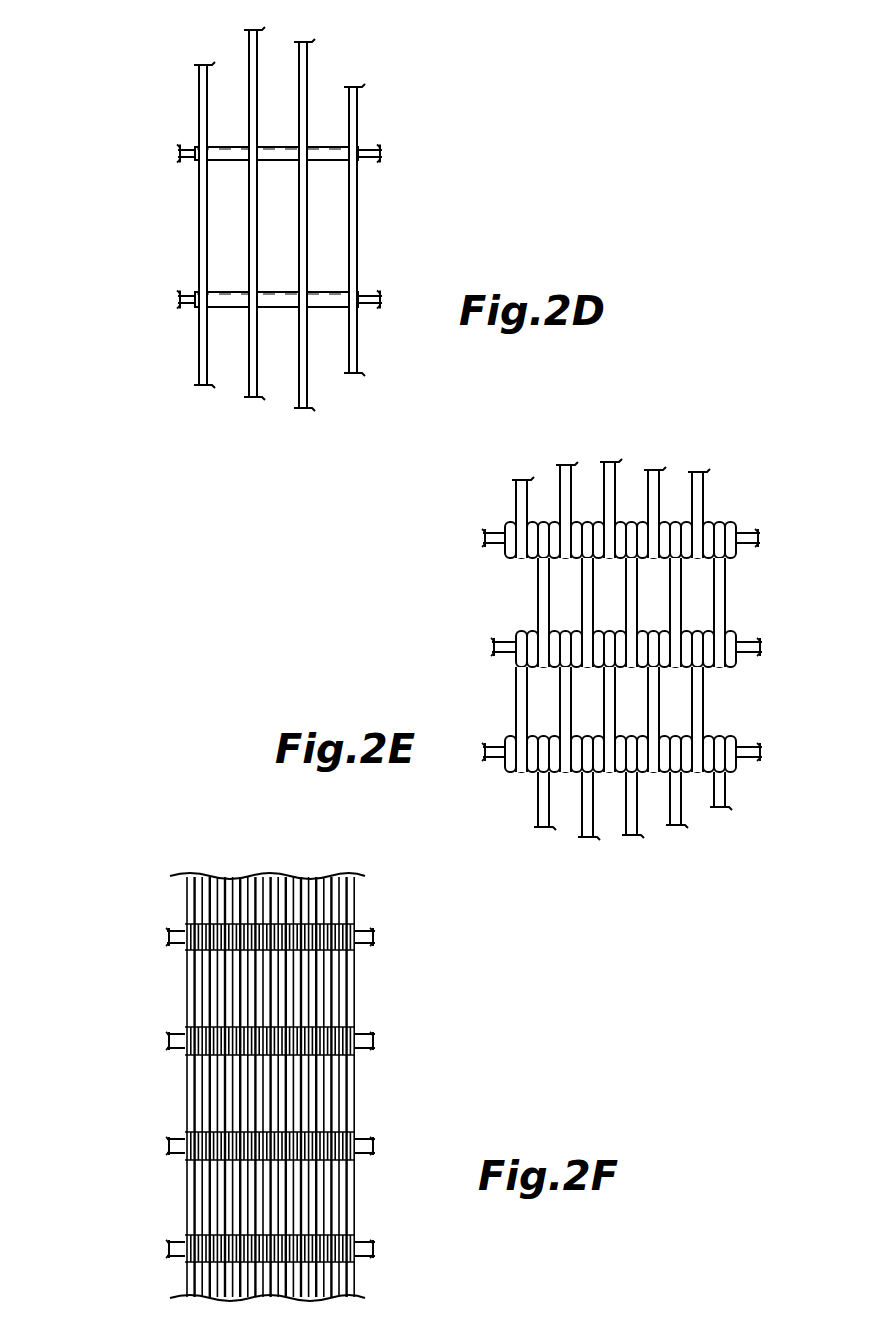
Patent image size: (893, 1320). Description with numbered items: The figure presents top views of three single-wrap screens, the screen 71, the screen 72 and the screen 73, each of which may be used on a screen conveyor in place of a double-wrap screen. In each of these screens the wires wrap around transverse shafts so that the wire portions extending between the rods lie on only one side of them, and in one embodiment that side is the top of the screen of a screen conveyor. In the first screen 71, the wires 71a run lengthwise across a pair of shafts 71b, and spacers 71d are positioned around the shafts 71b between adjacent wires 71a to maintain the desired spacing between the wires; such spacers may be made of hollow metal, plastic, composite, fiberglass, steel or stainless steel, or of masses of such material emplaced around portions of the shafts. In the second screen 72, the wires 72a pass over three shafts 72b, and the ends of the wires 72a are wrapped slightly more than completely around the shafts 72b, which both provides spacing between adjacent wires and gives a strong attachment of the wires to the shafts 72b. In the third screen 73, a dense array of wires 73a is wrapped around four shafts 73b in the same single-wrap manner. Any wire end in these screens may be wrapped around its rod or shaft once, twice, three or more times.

In FIG. 2D, the screen 71 is at (289, 208).
In FIG. 2D, the wires 71a is at (249, 63).
In FIG. 2D, the shafts 71b is at (188, 151).
In FIG. 2D, the spacers 71d is at (270, 152).
In FIG. 2E, the screen 72 is at (593, 605).
In FIG. 2E, the wires 72a is at (699, 493).
In FIG. 2E, the shafts 72b is at (757, 538).
In FIG. 2F, the screen 73 is at (274, 1045).
In FIG. 2F, the wires 73a is at (273, 998).
In FIG. 2F, the shafts 73b is at (185, 950).